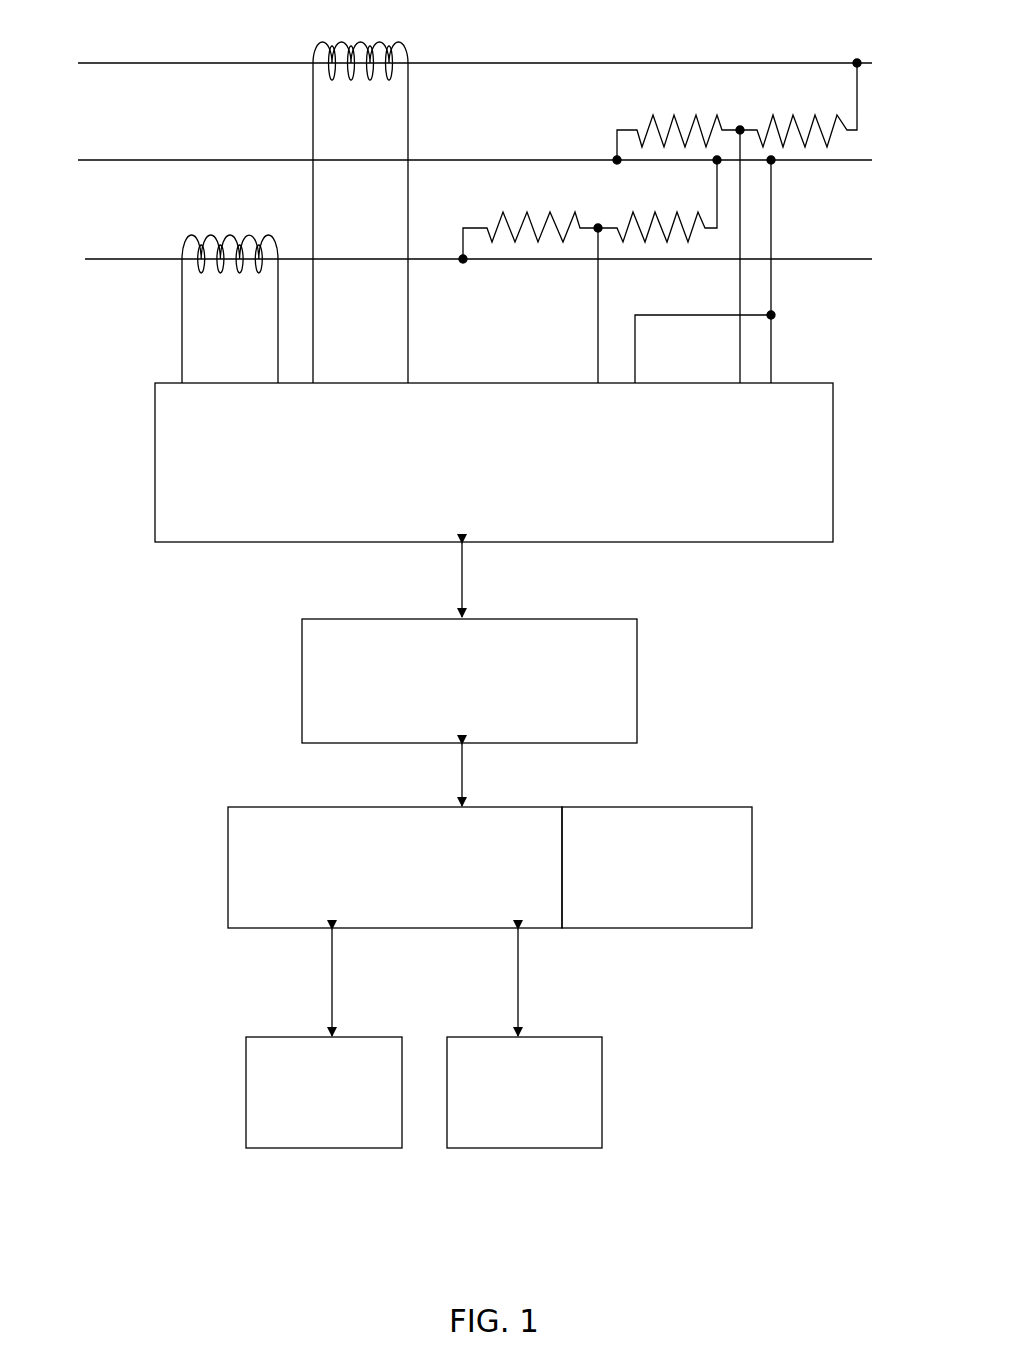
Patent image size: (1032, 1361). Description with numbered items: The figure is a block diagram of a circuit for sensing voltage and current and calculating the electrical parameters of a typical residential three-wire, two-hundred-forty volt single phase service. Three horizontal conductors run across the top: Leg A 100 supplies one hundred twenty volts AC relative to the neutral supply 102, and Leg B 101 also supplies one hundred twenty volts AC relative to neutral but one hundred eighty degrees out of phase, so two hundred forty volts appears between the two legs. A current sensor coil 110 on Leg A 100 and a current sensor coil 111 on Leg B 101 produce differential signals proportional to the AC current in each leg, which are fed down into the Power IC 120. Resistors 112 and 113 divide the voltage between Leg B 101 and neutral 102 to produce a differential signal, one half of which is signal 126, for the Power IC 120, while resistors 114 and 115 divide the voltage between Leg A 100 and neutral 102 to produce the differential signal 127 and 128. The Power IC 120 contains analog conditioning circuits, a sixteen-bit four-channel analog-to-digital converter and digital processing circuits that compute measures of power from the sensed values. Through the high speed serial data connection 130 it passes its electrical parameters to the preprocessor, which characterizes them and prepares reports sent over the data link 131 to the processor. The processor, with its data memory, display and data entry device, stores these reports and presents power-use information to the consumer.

The Leg A 100 is at (237, 57).
The Leg B 101 is at (140, 267).
The neutral supply 102 is at (248, 153).
The current sensor coil 110 is at (410, 42).
The current sensor coil 111 is at (233, 232).
The resistor 112 is at (540, 212).
The resistor 113 is at (663, 212).
The resistor 114 is at (705, 107).
The resistor 115 is at (805, 112).
The Power IC 120 is at (143, 470).
The differential signal 126 is at (640, 305).
The differential signal 127 is at (730, 357).
The differential signal 128 is at (778, 353).
The data connection 130 is at (455, 578).
The data link 131 is at (452, 780).